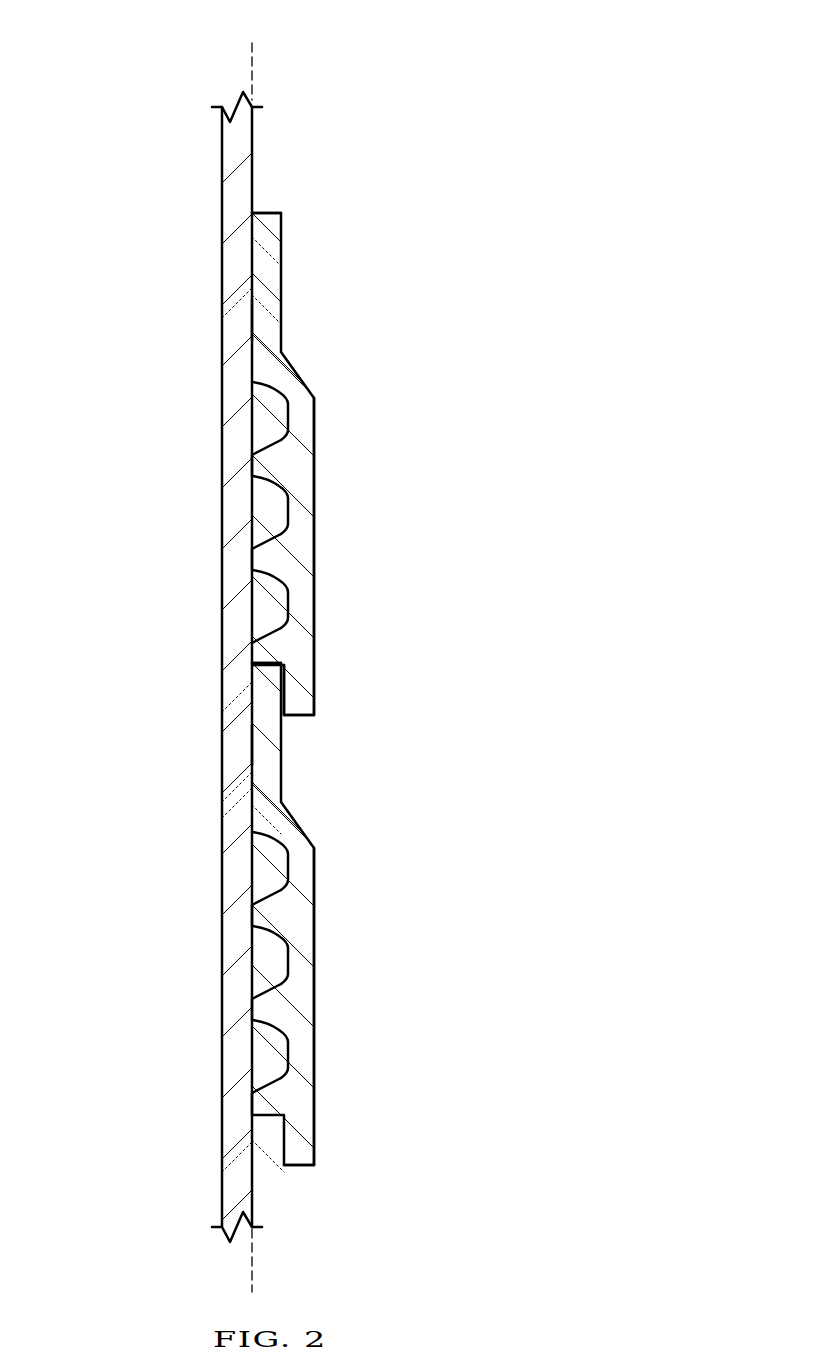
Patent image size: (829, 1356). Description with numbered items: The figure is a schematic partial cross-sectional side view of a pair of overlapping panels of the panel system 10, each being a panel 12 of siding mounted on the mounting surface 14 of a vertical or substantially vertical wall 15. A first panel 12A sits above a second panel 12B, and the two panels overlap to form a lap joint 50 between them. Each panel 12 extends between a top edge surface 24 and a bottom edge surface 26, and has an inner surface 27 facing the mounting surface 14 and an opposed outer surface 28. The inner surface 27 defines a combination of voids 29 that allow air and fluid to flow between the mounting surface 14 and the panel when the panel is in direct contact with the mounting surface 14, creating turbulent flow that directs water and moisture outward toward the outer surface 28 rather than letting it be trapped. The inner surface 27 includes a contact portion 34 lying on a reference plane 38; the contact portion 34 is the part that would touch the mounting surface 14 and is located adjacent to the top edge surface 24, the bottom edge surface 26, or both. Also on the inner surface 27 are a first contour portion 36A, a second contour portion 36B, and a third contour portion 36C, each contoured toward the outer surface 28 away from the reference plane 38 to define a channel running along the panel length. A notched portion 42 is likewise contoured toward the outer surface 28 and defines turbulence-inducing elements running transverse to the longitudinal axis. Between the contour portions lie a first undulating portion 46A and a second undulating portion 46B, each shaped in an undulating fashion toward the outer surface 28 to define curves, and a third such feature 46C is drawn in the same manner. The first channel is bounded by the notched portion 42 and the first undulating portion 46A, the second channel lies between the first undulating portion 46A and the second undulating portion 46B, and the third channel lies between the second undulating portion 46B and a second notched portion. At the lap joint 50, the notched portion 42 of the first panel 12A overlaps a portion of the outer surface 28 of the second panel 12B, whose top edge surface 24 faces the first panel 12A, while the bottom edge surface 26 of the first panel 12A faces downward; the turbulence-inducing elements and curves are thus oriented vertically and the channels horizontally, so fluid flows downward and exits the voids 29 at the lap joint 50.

The panel system 10 is at (311, 66).
The panel 12 is at (330, 711).
The first panel 12A is at (312, 362).
The second panel 12B is at (318, 828).
The mounting surface 14 is at (255, 133).
The wall 15 is at (221, 147).
The top edge surface 24 is at (264, 211).
The bottom edge surface 26 is at (298, 717).
The inner surface 27 is at (251, 237).
The outer surface 28 is at (318, 543).
The voids 29 is at (178, 745).
The contact portion 34 is at (251, 321).
The first contour portion 36A is at (286, 416).
The second contour portion 36B is at (286, 512).
The third contour portion 36C is at (285, 605).
The reference plane 38 is at (250, 77).
The notched portion 42 is at (251, 295).
The first undulating portion 46A is at (272, 437).
The second undulating portion 46B is at (274, 532).
The third recess 46C is at (275, 648).
The lap joint 50 is at (295, 729).